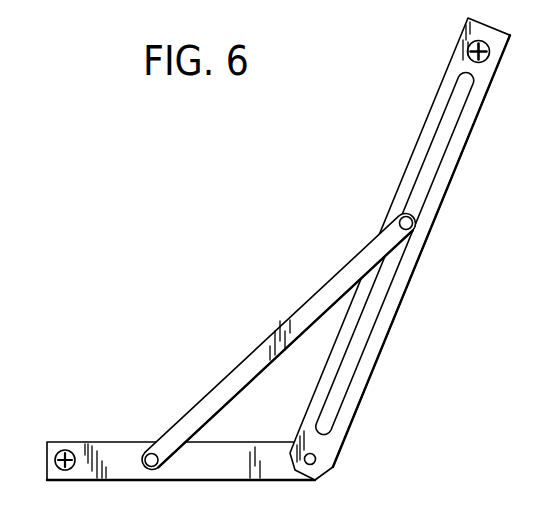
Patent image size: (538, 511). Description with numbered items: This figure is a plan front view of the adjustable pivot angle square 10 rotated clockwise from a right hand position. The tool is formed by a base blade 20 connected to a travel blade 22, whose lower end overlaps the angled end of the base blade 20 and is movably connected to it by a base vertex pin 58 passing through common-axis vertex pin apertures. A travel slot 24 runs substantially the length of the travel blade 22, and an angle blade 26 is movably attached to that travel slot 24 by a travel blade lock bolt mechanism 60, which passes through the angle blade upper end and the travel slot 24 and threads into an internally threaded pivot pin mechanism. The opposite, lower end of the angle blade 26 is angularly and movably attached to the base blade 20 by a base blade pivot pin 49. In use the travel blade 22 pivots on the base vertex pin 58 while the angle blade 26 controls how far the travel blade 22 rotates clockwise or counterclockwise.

The adjustable pivot angle square 10 is at (374, 98).
The base blade 20 is at (215, 452).
The travel blade 22 is at (404, 265).
The travel slot 24 is at (368, 318).
The angle blade 26 is at (275, 335).
The base blade pivot pin 49 is at (149, 452).
The base vertex pin 58 is at (316, 459).
The travel blade lock bolt mechanism 60 is at (397, 221).